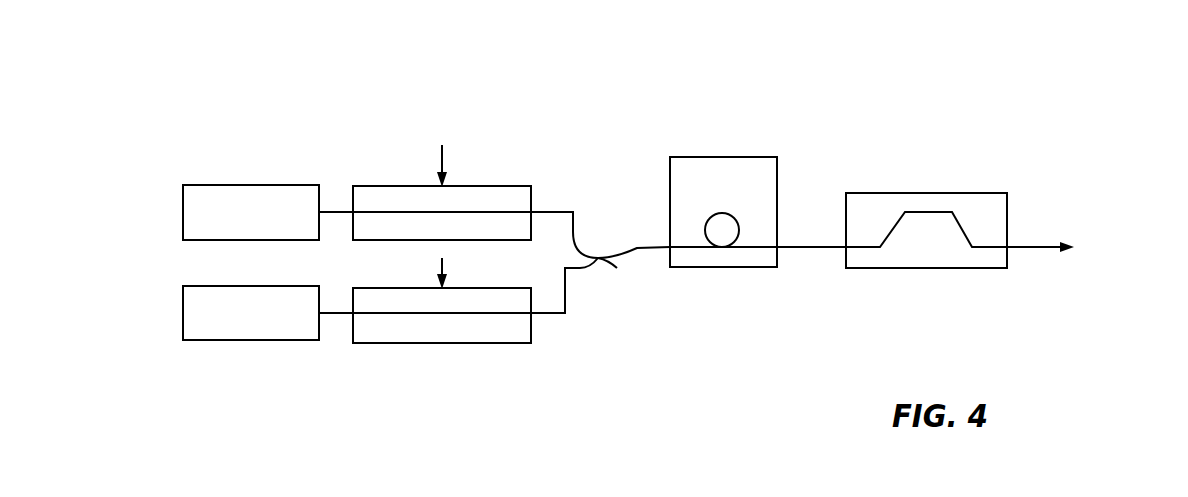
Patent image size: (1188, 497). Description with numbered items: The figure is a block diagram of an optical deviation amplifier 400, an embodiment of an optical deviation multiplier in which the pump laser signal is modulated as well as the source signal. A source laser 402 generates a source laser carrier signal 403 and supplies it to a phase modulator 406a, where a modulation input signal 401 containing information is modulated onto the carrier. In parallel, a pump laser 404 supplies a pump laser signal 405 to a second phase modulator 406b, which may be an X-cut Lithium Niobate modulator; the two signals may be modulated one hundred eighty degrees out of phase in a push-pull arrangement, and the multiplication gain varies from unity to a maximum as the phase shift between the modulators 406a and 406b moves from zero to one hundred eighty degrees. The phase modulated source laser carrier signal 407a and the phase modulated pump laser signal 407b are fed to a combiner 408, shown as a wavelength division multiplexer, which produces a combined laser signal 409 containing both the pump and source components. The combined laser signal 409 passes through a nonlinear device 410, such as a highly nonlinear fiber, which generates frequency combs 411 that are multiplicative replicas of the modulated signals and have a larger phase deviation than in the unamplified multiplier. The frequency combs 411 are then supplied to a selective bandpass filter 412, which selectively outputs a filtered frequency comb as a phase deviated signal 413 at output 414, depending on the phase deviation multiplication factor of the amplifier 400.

The optical deviation amplifier 400 is at (228, 91).
The modulation input signal 401 is at (446, 156).
The source laser 402 is at (207, 185).
The source laser carrier signal 403 is at (322, 210).
The pump laser 404 is at (192, 286).
The pump laser signal 405 is at (322, 311).
The phase modulator 406a is at (487, 186).
The phase modulator 406b is at (533, 332).
The phase modulated source laser carrier signal 407a is at (559, 210).
The phase modulated pump laser signal 407b is at (573, 312).
The combiner 408 is at (598, 260).
The combined laser signal 409 is at (648, 249).
The nonlinear device 410 is at (740, 157).
The frequency combs 411 is at (782, 247).
The selective bandpass filter 412 is at (985, 193).
The phase deviated signal 413 is at (1034, 247).
The output 414 is at (1077, 247).